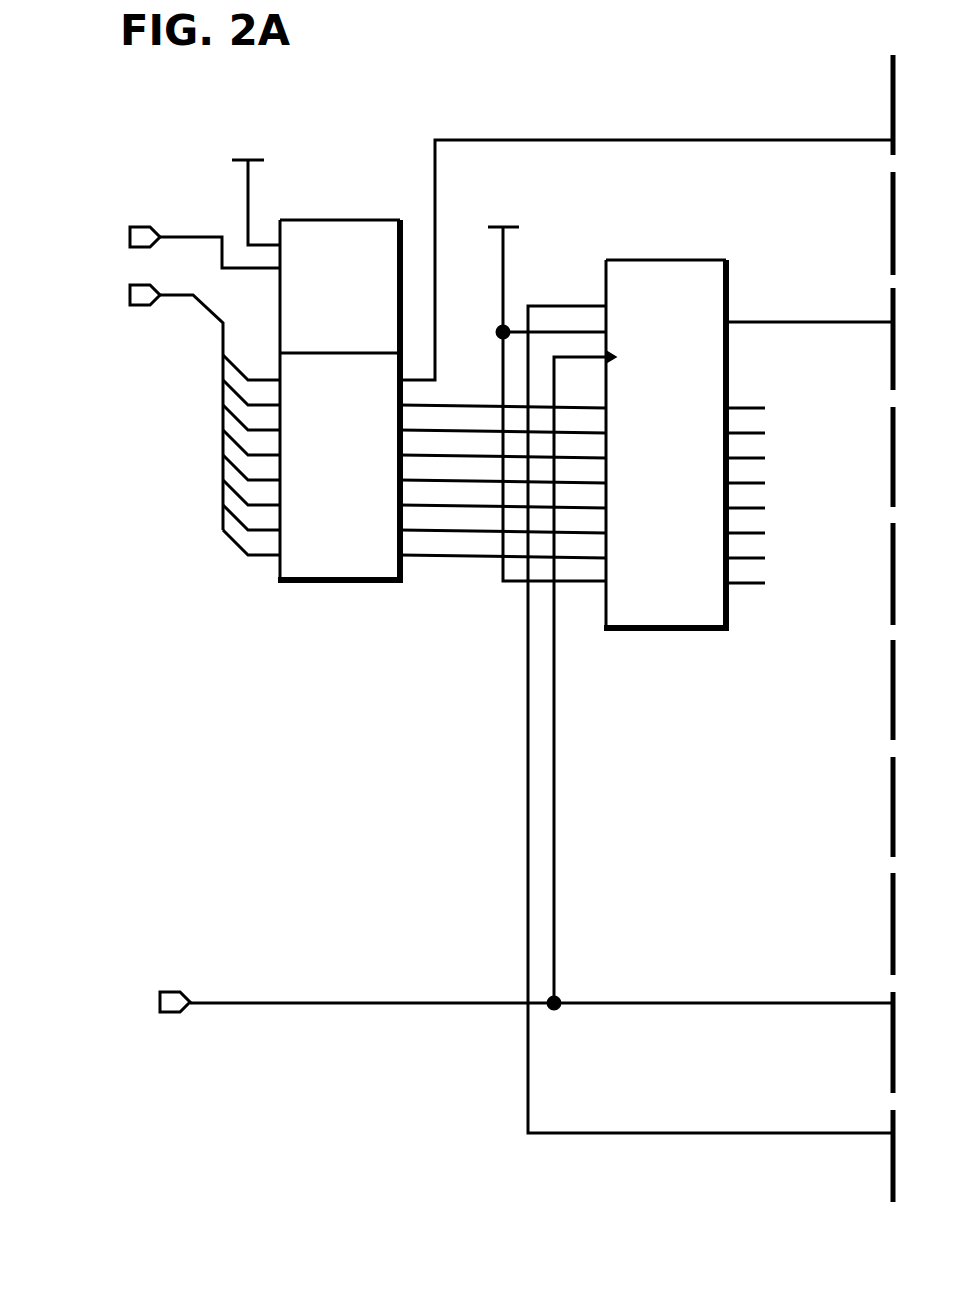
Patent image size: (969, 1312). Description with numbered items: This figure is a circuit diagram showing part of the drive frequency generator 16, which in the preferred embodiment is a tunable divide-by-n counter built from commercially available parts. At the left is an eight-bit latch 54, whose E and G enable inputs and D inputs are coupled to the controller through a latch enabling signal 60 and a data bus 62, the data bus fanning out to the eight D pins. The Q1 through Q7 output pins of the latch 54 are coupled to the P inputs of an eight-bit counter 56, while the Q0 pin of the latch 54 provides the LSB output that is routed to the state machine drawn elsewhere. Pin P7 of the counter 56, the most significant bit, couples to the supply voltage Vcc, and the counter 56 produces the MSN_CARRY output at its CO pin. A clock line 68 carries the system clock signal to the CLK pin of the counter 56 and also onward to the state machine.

The drive frequency generator 16 is at (585, 48).
The 8-bit latch 54 is at (322, 220).
The 8-bit counter 56 is at (729, 260).
The latch enabling signal 60 is at (137, 226).
The data bus 62 is at (137, 306).
The clock line 68 is at (168, 991).